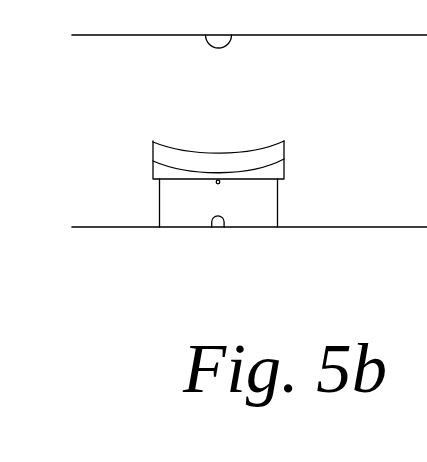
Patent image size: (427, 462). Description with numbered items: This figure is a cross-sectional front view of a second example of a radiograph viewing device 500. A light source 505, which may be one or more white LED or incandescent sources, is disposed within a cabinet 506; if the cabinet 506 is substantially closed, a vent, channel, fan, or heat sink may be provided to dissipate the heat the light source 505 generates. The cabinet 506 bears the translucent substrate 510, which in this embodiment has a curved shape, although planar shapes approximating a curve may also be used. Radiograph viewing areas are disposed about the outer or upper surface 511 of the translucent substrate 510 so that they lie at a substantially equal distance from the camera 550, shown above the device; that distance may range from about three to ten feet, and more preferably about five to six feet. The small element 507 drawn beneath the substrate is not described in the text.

The radiograph viewing device 500 is at (112, 136).
The light source 505 is at (216, 227).
The cabinet 506 is at (278, 195).
The optical fiber 507 is at (217, 184).
The translucent substrate 510 is at (284, 147).
The outer or upper surface 511 is at (220, 172).
The camera 550 is at (227, 41).